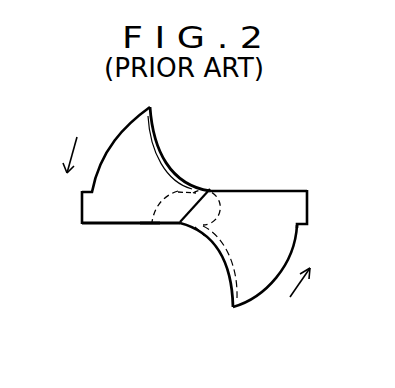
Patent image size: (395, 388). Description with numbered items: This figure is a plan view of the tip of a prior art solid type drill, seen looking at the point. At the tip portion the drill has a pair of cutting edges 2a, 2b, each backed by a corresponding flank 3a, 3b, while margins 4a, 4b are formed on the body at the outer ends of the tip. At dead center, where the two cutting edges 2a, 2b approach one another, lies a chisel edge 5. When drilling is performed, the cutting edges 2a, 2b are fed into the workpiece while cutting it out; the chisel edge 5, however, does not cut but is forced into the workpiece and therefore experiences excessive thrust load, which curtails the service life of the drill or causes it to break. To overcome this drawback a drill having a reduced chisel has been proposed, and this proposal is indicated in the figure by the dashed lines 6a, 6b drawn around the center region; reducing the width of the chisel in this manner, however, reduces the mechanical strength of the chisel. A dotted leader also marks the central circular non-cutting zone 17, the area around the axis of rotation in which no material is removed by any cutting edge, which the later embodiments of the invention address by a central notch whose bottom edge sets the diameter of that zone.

The cutting edge 2a is at (262, 189).
The cutting edge 2b is at (120, 223).
The flank 3a is at (280, 230).
The flank 3b is at (124, 141).
The margin 4a is at (307, 200).
The margin 4b is at (82, 207).
The chisel edge 5 is at (200, 186).
The reduced chisel (dashed line) 6a is at (176, 192).
The reduced chisel (dashed line) 6b is at (206, 237).
The circular non-cutting zone 17 is at (149, 225).